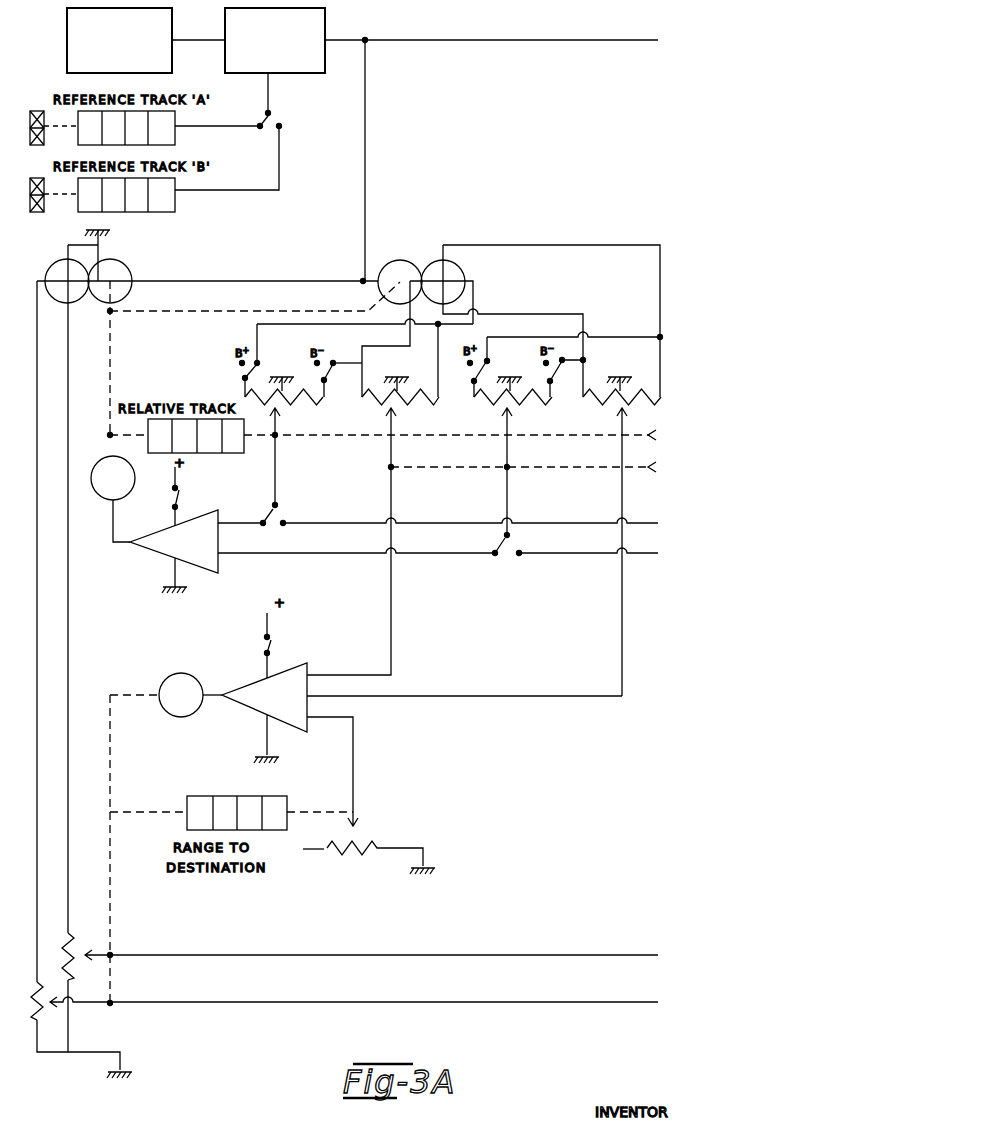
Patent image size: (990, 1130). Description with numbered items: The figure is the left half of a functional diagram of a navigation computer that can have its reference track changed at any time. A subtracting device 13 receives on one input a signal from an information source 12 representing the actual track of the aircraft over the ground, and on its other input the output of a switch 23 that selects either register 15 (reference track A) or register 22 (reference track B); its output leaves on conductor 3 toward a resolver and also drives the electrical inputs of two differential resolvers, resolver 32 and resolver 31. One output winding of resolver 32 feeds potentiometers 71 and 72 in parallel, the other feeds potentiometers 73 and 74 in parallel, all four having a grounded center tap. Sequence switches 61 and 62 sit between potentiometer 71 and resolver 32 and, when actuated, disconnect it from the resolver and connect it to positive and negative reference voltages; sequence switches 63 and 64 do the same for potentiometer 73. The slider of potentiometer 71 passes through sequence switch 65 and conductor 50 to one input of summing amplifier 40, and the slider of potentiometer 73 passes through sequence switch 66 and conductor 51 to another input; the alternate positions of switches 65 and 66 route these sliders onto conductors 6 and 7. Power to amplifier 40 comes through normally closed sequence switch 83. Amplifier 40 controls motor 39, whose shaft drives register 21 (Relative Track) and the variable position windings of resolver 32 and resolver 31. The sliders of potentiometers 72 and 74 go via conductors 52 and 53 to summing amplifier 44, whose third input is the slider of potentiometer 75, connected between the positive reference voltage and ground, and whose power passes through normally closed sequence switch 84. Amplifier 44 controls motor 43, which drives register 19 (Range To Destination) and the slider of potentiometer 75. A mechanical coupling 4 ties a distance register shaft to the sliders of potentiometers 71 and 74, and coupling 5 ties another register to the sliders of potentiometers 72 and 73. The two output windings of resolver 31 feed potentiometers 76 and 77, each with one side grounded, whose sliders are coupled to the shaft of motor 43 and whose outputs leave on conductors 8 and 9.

The information source 12 is at (67, 40).
The subtracting device 13 is at (313, 26).
The conductor 3 is at (631, 38).
The register 15 is at (163, 137).
The register 22 is at (165, 208).
The switch 23 is at (273, 118).
The differential resolver 31 is at (108, 262).
The differential resolver 32 is at (395, 262).
The sequence switch 61 is at (243, 370).
The sequence switch 62 is at (322, 371).
The sequence switch 63 is at (472, 371).
The sequence switch 64 is at (549, 371).
The potentiometer 71 is at (294, 404).
The potentiometer 72 is at (411, 404).
The potentiometer 73 is at (521, 404).
The potentiometer 74 is at (614, 402).
The mechanical coupling 4 is at (638, 435).
The coupling 5 is at (629, 468).
The conductor 6 is at (647, 522).
The conductor 7 is at (647, 553).
The register 21 is at (209, 450).
The motor 39 is at (123, 495).
The sequence switch 83 is at (179, 493).
The summing amplifier 40 is at (170, 558).
The conductor 50 is at (262, 521).
The sequence switch 65 is at (281, 516).
The conductor 51 is at (334, 553).
The sequence switch 66 is at (498, 555).
The sequence switch 84 is at (269, 648).
The motor 43 is at (204, 678).
The summing amplifier 44 is at (261, 716).
The conductor 52 is at (372, 673).
The conductor 53 is at (525, 694).
The register 19 is at (243, 798).
The potentiometer 75 is at (355, 851).
The potentiometer 76 is at (66, 948).
The potentiometer 77 is at (38, 990).
The conductor 8 is at (620, 955).
The conductor 9 is at (620, 1002).